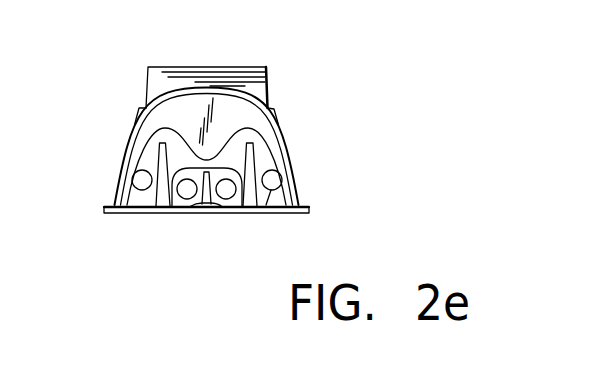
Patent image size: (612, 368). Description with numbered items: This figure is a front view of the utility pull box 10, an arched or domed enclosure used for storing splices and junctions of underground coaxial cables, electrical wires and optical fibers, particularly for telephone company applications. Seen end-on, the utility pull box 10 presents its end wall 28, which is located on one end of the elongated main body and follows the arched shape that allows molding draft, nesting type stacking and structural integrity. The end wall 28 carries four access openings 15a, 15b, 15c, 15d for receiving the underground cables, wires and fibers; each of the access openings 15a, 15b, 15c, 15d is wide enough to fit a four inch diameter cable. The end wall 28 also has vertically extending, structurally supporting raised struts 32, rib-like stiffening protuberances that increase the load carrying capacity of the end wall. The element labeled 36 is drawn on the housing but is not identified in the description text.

The utility pull box 10 is at (290, 90).
The end wall 28 is at (262, 146).
The housing shell 36 is at (125, 196).
The access opening 15a is at (142, 190).
The access opening 15b is at (172, 206).
The access opening 15c is at (238, 206).
The access opening 15d is at (284, 185).
The vertically extending structurally supporting raised struts 32 is at (254, 213).